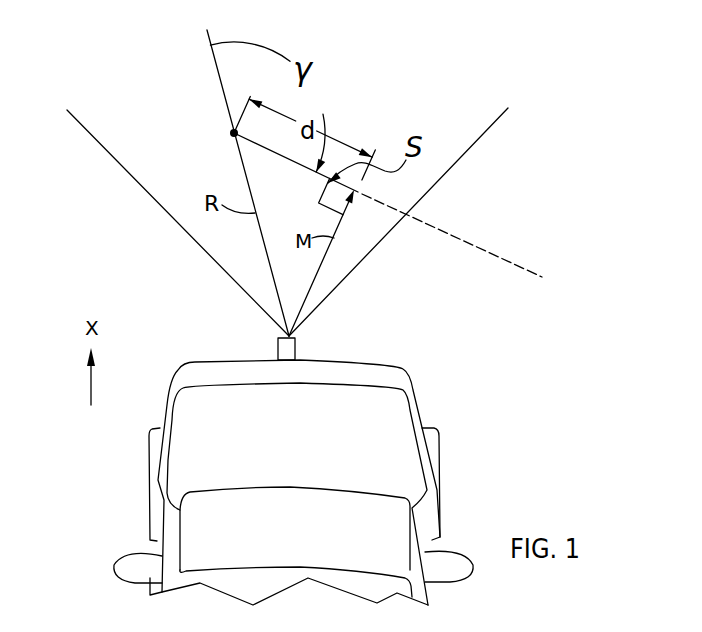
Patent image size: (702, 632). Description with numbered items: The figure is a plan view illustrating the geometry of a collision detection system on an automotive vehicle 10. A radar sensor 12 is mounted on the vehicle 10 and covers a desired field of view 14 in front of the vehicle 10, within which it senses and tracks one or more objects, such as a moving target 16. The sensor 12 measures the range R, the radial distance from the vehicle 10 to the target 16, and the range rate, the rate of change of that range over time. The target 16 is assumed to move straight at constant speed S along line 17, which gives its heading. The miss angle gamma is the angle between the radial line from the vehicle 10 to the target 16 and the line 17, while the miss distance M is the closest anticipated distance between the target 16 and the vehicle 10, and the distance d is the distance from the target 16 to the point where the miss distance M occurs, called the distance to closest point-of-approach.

The automotive vehicle 10 is at (386, 365).
The radar sensor 12 is at (297, 347).
The field of view 14 is at (92, 136).
The moving target 16 is at (228, 133).
The line in the direction of movement of the object 17 is at (464, 241).